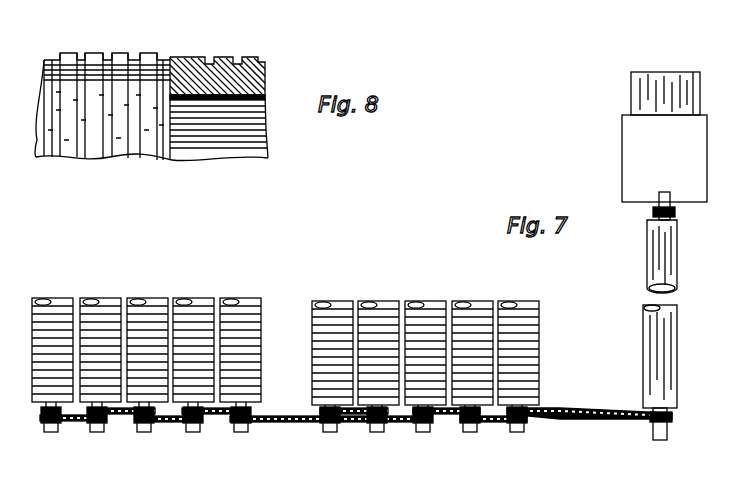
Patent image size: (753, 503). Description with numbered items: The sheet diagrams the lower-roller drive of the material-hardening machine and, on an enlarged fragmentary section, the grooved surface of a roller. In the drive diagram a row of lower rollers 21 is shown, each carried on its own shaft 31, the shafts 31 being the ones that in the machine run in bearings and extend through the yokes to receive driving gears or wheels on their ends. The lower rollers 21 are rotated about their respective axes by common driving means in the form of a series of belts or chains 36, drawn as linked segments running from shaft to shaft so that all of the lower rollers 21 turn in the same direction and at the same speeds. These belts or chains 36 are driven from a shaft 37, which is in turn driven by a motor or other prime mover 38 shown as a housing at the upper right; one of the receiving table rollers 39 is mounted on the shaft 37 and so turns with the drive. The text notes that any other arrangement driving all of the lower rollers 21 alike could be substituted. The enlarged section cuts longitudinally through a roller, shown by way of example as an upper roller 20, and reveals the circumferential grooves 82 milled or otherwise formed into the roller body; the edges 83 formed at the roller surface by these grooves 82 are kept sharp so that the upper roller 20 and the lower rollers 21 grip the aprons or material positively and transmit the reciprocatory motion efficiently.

In FIG. 8, the upper roller 20 is at (266, 93).
In FIG. 8, the circumferential grooves 82 is at (240, 63).
In FIG. 8, the edges 83 is at (128, 55).
In FIG. 7, the lower roller 21 is at (63, 298).
In FIG. 7, the shaft 31 is at (49, 433).
In FIG. 7, the belts or chains 36 is at (61, 422).
In FIG. 7, the shaft 37 is at (665, 437).
In FIG. 7, the motor or other prime mover 38 is at (627, 150).
In FIG. 7, the receiving table roller 39 is at (670, 262).